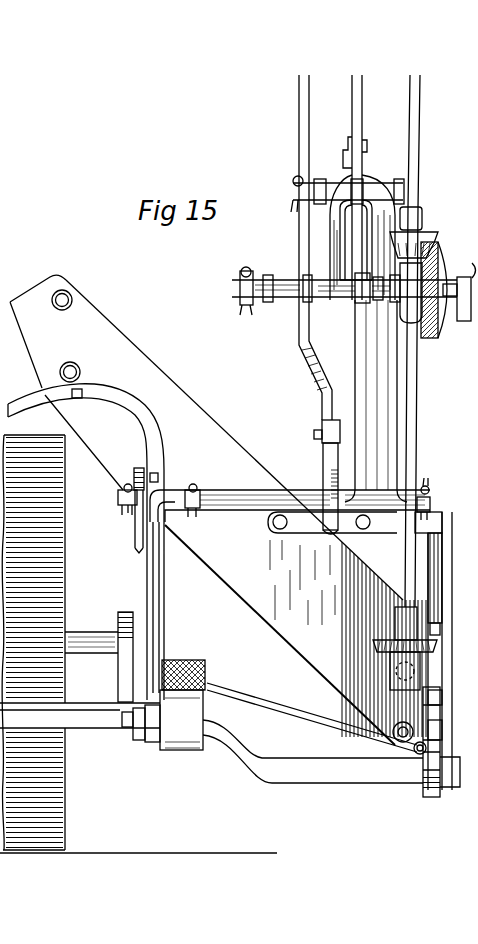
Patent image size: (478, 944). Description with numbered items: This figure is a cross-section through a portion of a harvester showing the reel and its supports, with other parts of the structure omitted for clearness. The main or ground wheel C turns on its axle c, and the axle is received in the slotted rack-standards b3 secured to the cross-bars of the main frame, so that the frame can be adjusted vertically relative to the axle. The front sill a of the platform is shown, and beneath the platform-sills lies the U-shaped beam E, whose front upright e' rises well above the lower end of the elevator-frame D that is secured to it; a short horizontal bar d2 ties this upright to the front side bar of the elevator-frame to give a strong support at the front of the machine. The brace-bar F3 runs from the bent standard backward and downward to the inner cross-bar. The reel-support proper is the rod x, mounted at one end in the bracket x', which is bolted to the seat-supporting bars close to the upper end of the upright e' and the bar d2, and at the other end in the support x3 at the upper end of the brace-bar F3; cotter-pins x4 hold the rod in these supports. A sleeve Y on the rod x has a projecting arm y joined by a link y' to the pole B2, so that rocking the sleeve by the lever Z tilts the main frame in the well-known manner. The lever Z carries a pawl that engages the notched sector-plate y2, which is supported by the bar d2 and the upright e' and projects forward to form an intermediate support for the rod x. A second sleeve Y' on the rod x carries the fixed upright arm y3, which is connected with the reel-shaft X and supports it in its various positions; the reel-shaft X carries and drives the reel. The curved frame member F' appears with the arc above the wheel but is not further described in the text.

The reel-shaft X is at (240, 286).
The lever Z is at (312, 388).
The fixed upright arm y3 is at (380, 398).
The notched plate or sector y2 is at (320, 437).
The bracket x' is at (430, 457).
The rod x is at (262, 484).
The cotter-pins x4 is at (442, 499).
The support x3 is at (133, 475).
The curved frame arm F' is at (86, 427).
The sleeve Y is at (302, 485).
The projecting arm y is at (175, 519).
The brace-bar F3 is at (137, 535).
The main or ground wheel C is at (33, 642).
The slotted rack-standards b3 is at (123, 611).
The axle c is at (84, 640).
The link y' is at (169, 607).
The pole B2 is at (200, 663).
The short horizontal bar d2 is at (307, 527).
The second sleeve Y' is at (234, 440).
The front upright e' is at (412, 498).
The elevator-frame D is at (348, 638).
The front sill a is at (302, 777).
The U-shaped beam E is at (442, 797).